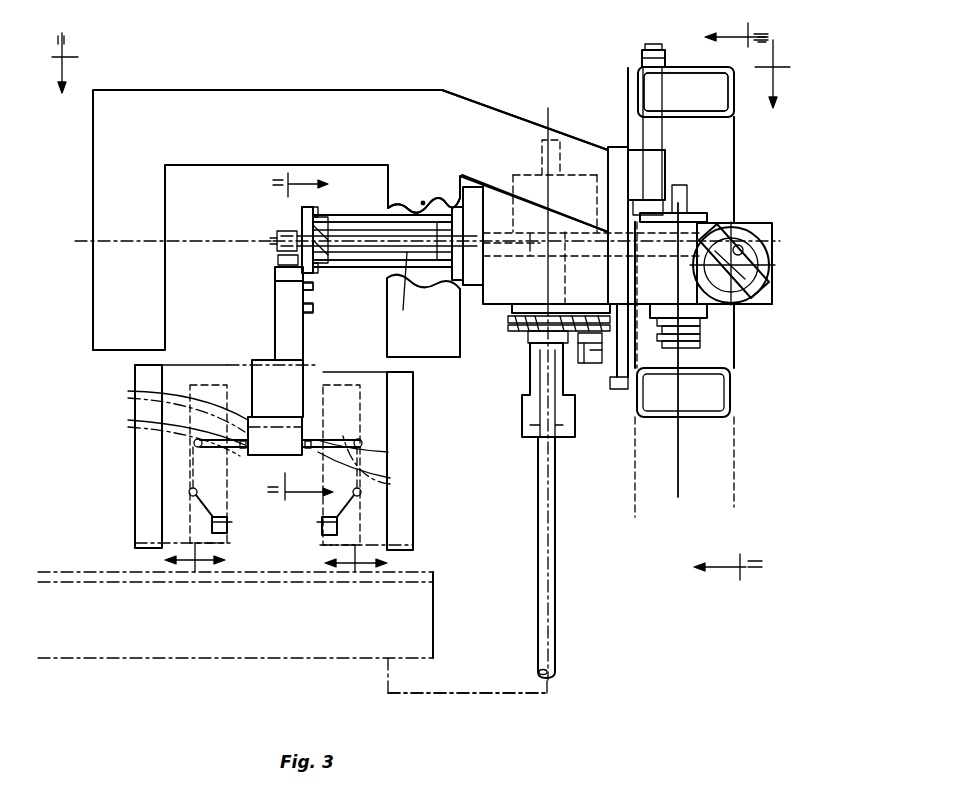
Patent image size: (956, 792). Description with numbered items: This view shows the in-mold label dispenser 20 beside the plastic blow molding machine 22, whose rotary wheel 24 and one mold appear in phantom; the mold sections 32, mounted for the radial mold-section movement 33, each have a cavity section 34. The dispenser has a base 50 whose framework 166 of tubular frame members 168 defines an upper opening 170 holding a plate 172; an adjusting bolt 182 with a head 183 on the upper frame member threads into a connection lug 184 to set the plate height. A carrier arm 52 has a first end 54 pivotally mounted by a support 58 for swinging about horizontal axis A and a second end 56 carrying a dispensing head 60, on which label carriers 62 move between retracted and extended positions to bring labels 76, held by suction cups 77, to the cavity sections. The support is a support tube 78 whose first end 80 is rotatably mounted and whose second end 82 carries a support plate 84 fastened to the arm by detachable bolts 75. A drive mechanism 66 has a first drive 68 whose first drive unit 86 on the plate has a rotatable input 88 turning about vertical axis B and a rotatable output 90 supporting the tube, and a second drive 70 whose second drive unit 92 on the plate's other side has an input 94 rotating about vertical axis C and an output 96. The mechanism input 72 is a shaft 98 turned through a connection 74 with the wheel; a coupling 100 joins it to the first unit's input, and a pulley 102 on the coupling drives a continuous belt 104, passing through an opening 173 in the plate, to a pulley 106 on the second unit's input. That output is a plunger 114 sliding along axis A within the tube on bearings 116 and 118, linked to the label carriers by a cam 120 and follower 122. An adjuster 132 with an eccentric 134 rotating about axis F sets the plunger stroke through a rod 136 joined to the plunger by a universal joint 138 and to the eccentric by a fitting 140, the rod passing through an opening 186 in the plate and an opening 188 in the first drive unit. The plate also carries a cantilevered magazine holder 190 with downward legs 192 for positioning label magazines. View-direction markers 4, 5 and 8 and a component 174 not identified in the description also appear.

The section line 4- 4 is at (421, 85).
The section line 5- 5 is at (718, 301).
The section line 8- 8 is at (306, 339).
The in-mold label dispenser 20 is at (784, 224).
The plastic blow molding machine 22 is at (438, 618).
The rotary wheel 24 is at (437, 588).
The mold sections 32 is at (133, 482).
The schematic mounting for radial movement 33 is at (197, 572).
The cavity section 34 is at (190, 502).
The base 50 is at (688, 65).
The carrier arm 52 is at (275, 318).
The first end of carrier arm 54 is at (275, 282).
The second end of carrier arm 56 is at (252, 403).
The support 58 is at (423, 200).
The dispensing head 60 is at (263, 455).
The label carriers 62 is at (312, 438).
The drive mechanism 66 is at (597, 100).
The first drive 68 is at (483, 305).
The second drive 70 is at (736, 207).
The input 72 is at (556, 643).
The connection 74 is at (470, 695).
The bolts 75 is at (313, 308).
The labels 76 is at (362, 360).
The suction cups 77 is at (315, 452).
The support tube 78 is at (405, 203).
The first end of support tube 80 is at (456, 207).
The second end of support tube 82 is at (323, 206).
The support plate 84 is at (310, 286).
The first drive unit 86 is at (478, 300).
The rotatable input of first drive unit 88 is at (533, 327).
The rotatable output of first drive unit 90 is at (471, 208).
The second drive unit 92 is at (700, 318).
The rotatable input of second drive unit 94 is at (700, 330).
The output of second drive unit 96 is at (403, 292).
The shaft 98 is at (554, 452).
The coupling 100 is at (572, 389).
The pulley 102 is at (508, 325).
The continuous belt 104 is at (645, 335).
The pulley 106 is at (700, 345).
The plunger 114 is at (408, 220).
The bearing 116 is at (443, 222).
The bearing 118 is at (322, 228).
The cam 120 is at (278, 234).
The follower 122 is at (288, 258).
The adjuster 132 is at (760, 262).
The eccentric 134 is at (716, 258).
The rod 136 is at (556, 245).
The universal joint 138 is at (507, 243).
The fitting 140 is at (727, 235).
The framework 166 is at (736, 470).
The tubular frame members 168 is at (735, 107).
The upper opening 170 is at (736, 157).
The plate 172 is at (620, 145).
The opening in plate 173 is at (613, 380).
The bolt 174 is at (633, 93).
The adjusting bolt 182 is at (662, 138).
The head 183 is at (653, 50).
The connection lug 184 is at (666, 163).
The opening in plate 186 is at (686, 210).
The opening in first drive unit 188 is at (590, 137).
The magazine holder 190 is at (356, 90).
The legs 192 is at (104, 318).
The horizontal pivotal axis A is at (186, 247).
The vertical axis B is at (550, 515).
The vertical axis C is at (680, 447).
The eccentric axis F is at (773, 293).